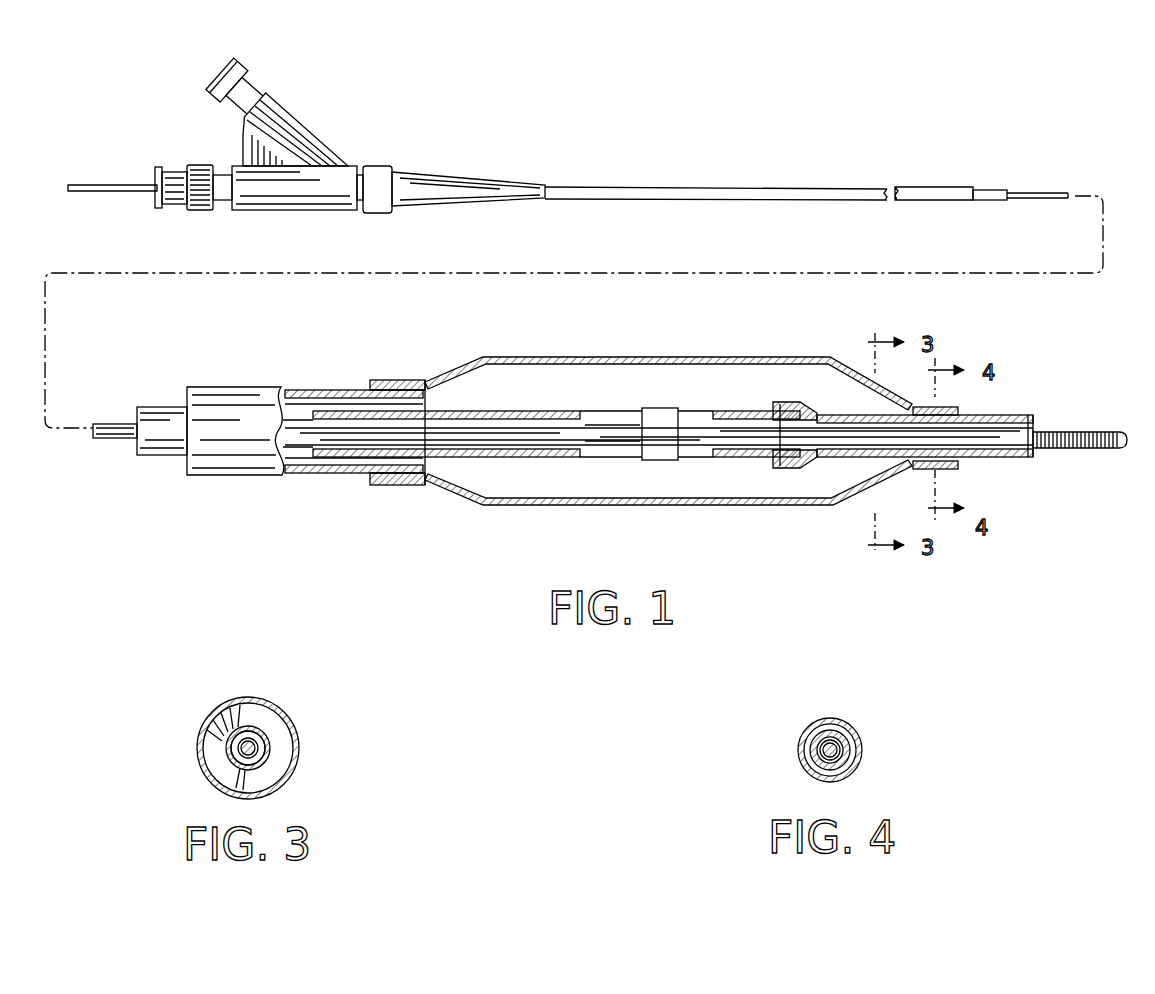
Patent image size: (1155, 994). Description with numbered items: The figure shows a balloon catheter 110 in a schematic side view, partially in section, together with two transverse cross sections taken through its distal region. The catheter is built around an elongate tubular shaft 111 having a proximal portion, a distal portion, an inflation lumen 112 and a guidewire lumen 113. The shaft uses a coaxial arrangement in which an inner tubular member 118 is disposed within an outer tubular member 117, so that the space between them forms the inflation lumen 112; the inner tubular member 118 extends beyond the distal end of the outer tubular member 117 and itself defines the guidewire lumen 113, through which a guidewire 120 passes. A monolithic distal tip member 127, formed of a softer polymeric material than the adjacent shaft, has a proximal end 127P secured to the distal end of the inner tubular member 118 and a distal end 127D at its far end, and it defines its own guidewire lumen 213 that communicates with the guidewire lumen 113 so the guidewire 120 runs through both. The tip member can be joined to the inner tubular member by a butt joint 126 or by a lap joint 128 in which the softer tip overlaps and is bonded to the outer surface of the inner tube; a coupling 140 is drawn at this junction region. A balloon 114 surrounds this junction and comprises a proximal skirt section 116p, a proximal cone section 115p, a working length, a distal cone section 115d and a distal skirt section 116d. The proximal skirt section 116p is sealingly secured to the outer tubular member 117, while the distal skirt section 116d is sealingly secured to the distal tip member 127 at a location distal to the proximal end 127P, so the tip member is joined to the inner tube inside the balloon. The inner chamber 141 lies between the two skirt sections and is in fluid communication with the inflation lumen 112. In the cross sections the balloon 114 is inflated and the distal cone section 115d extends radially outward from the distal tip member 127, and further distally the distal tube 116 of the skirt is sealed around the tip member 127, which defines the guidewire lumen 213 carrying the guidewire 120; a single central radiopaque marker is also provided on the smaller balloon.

In FIG. 1, the balloon catheter 110 is at (476, 88).
In FIG. 1, the elongate tubular shaft 111 is at (700, 185).
In FIG. 1, the inflation lumen 112 is at (283, 469).
In FIG. 1, the guidewire lumen 113 is at (330, 452).
In FIG. 1, the balloon 114 is at (550, 356).
In FIG. 3, the balloon 114 is at (270, 700).
In FIG. 1, the proximal cone section 115p is at (452, 381).
In FIG. 1, the distal cone section 115d is at (872, 383).
In FIG. 4, the distal tube 116 is at (805, 770).
In FIG. 1, the proximal skirt section 116p is at (380, 486).
In FIG. 1, the distal skirt section 116d is at (960, 468).
In FIG. 1, the outer tubular member 117 is at (935, 185).
In FIG. 1, the inner tubular member 118 is at (990, 201).
In FIG. 3, the inner tubular member 118 is at (270, 748).
In FIG. 1, the guidewire 120 is at (98, 182).
In FIG. 3, the guidewire 120 is at (215, 735).
In FIG. 4, the guidewire 120 is at (815, 738).
In FIG. 1, the butt joint 126 is at (745, 410).
In FIG. 1, the distal tip member 127 is at (823, 468).
In FIG. 3, the distal tip member 127 is at (233, 775).
In FIG. 4, the distal tip member 127 is at (845, 728).
In FIG. 1, the proximal end of distal tip member 127P is at (770, 401).
In FIG. 1, the distal end of distal tip member 127D is at (1033, 414).
In FIG. 1, the lap joint 128 is at (781, 401).
In FIG. 1, the coupling 140 is at (640, 411).
In FIG. 1, the inner chamber 141 is at (340, 167).
In FIG. 1, the guidewire lumen 213 is at (1040, 456).
In FIG. 3, the guidewire lumen 213 is at (265, 760).
In FIG. 4, the guidewire lumen 213 is at (843, 762).